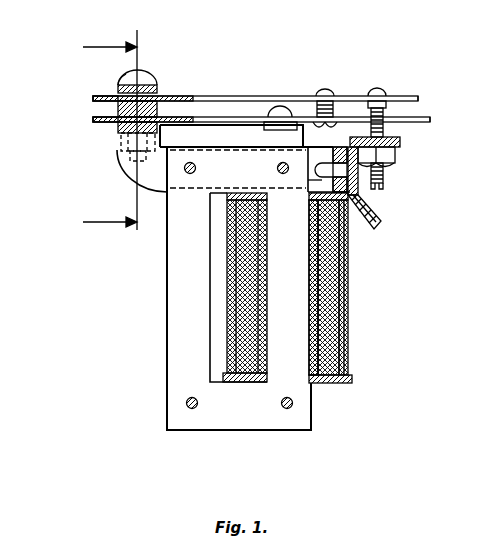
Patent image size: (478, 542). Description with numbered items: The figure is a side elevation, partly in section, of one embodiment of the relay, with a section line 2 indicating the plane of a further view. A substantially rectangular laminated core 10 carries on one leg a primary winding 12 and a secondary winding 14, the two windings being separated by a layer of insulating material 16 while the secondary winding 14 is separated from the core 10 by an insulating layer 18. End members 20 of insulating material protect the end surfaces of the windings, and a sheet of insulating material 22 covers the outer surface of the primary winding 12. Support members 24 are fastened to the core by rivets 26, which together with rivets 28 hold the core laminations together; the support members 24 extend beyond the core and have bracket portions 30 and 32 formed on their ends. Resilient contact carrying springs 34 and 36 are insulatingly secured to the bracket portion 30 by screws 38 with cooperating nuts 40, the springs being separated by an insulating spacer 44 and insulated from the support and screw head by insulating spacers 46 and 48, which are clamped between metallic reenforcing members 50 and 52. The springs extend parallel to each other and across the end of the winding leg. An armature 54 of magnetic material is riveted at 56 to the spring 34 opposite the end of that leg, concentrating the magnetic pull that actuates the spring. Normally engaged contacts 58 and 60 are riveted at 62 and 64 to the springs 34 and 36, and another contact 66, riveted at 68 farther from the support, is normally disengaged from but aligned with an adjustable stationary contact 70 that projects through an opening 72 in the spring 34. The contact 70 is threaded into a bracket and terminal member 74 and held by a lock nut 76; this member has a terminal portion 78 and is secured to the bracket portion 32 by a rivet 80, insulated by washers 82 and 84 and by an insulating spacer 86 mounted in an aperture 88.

The section line 2- 2 is at (110, 140).
The laminated core 10 is at (300, 420).
The primary winding 12 is at (336, 292).
The secondary winding 14 is at (333, 342).
The layer of insulating material 16 is at (335, 362).
The insulating layer 18 is at (311, 313).
The end members 20 is at (353, 380).
The sheet of insulating material 22 is at (227, 248).
The support members 24 is at (125, 166).
The rivets or fastening means 26 is at (278, 169).
The rivets or fastening means 28 is at (293, 403).
The bracket portion 30 is at (120, 134).
The bracket portion 32 is at (344, 150).
The resilient contact carrying spring 34 is at (203, 117).
The resilient contact carrying spring 36 is at (191, 96).
The screws 38 is at (138, 72).
The nuts 40 is at (120, 148).
The insulating spacer 44 is at (112, 100).
The insulating spacer 46 is at (114, 119).
The insulating spacer 48 is at (118, 90).
The metallic reenforcing member 50 is at (118, 126).
The metallic reenforcing member 52 is at (120, 84).
The armature 54 is at (262, 123).
The riveting 56 is at (278, 108).
The contact 58 is at (318, 103).
The contact 60 is at (337, 118).
The riveting 62 is at (330, 122).
The riveting 64 is at (325, 90).
The contact 66 is at (405, 98).
The riveting 68 is at (379, 88).
The adjustable stationary contact 70 is at (386, 170).
The opening 72 is at (403, 118).
The bracket and terminal member 74 is at (400, 141).
The lock nut 76 is at (395, 157).
The terminal portion 78 is at (382, 226).
The rivet or fastening means 80 is at (378, 184).
The insulating washer 82 is at (365, 213).
The insulating washer 84 is at (358, 195).
The insulating spacer 86 is at (316, 170).
The aperture 88 is at (315, 178).